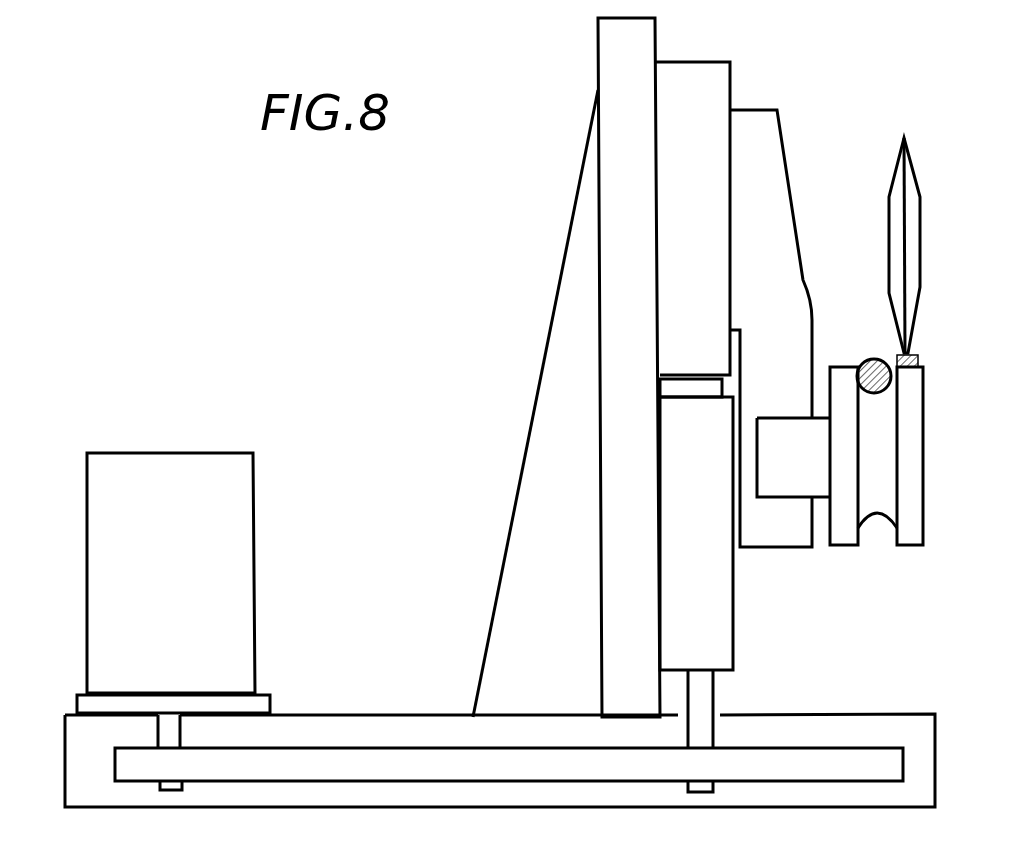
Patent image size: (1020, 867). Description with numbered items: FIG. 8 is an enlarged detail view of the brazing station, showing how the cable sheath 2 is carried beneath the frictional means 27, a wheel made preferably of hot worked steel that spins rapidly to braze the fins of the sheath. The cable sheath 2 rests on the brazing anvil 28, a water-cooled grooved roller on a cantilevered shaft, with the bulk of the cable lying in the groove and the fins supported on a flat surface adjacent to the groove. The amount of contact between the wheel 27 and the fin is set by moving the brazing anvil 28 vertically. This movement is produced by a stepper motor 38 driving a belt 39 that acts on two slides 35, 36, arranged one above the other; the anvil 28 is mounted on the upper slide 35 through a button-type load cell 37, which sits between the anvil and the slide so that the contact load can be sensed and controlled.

The cable sheath 2 is at (874, 355).
The frictional means 27 is at (920, 195).
The brazing anvil 28 is at (912, 406).
The upper slide 35 is at (678, 202).
The slide 36 is at (683, 525).
The button-type load cell 37 is at (673, 390).
The stepper motor 38 is at (233, 473).
The belt 39 is at (333, 757).